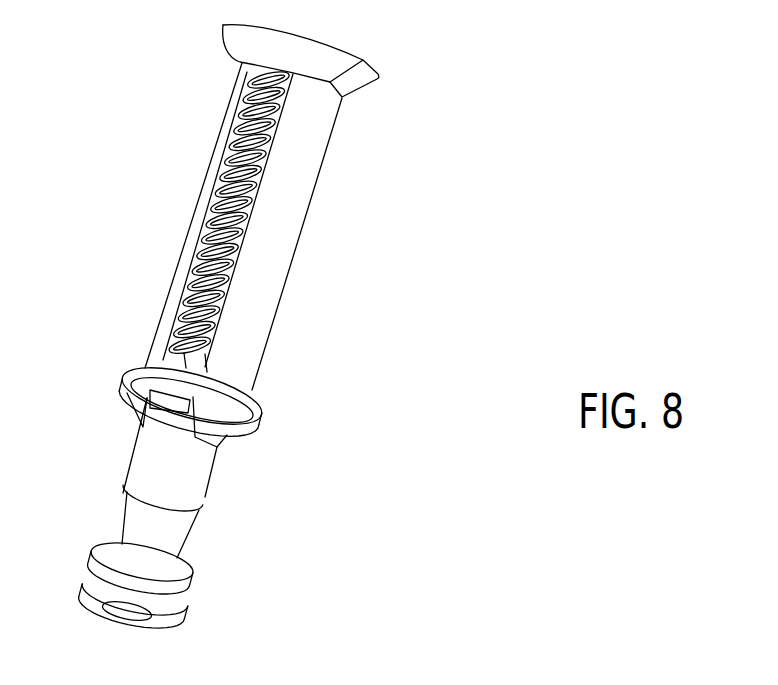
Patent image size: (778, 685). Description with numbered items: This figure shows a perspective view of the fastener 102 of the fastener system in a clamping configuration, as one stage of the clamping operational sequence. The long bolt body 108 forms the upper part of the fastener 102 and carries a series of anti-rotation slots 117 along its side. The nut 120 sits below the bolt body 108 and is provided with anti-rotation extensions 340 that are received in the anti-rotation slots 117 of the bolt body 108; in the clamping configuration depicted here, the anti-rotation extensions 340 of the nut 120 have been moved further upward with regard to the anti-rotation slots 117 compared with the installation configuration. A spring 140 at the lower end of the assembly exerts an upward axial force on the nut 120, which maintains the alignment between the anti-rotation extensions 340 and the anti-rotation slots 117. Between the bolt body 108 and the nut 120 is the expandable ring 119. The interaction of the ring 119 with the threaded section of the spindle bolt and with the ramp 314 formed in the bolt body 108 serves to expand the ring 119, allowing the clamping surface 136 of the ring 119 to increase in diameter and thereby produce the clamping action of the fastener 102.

The fastener 102 is at (514, 186).
The bolt body 108 is at (285, 473).
The anti-rotation slots 117 is at (171, 297).
The anti-rotation extensions 340 is at (156, 352).
The ring 119 is at (118, 369).
The clamping surface 136 is at (258, 406).
The ramp 314 is at (228, 437).
The nut 120 is at (114, 440).
The spring 140 is at (79, 567).